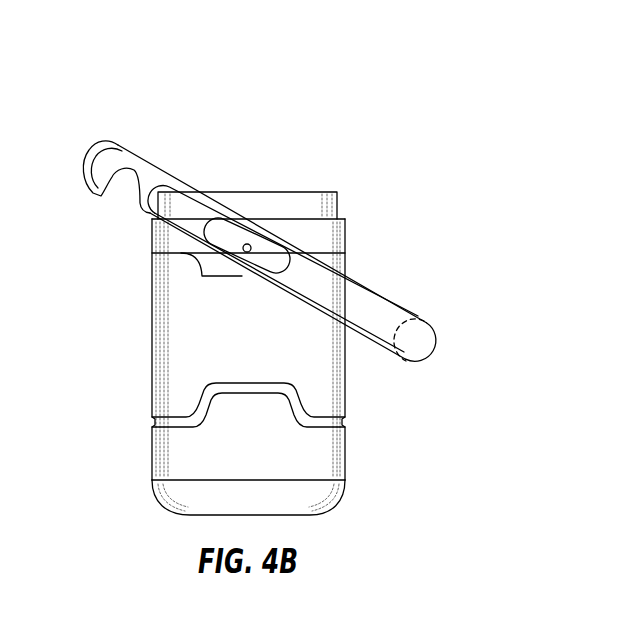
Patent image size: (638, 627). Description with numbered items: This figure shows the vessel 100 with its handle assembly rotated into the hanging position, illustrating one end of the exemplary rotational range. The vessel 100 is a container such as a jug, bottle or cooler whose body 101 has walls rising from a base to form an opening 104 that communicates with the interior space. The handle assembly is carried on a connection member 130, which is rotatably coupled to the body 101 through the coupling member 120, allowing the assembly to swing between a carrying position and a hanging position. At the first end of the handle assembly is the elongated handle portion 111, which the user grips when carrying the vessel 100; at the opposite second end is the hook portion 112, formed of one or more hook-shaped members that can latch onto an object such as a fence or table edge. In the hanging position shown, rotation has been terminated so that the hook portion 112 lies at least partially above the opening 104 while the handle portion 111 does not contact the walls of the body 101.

The vessel 100 is at (246, 297).
The body 101 is at (266, 456).
The opening 104 is at (246, 272).
The handle portion 111 is at (413, 364).
The hook portion 112 is at (100, 197).
The coupling member 120 is at (246, 253).
The connection member 130 is at (263, 255).